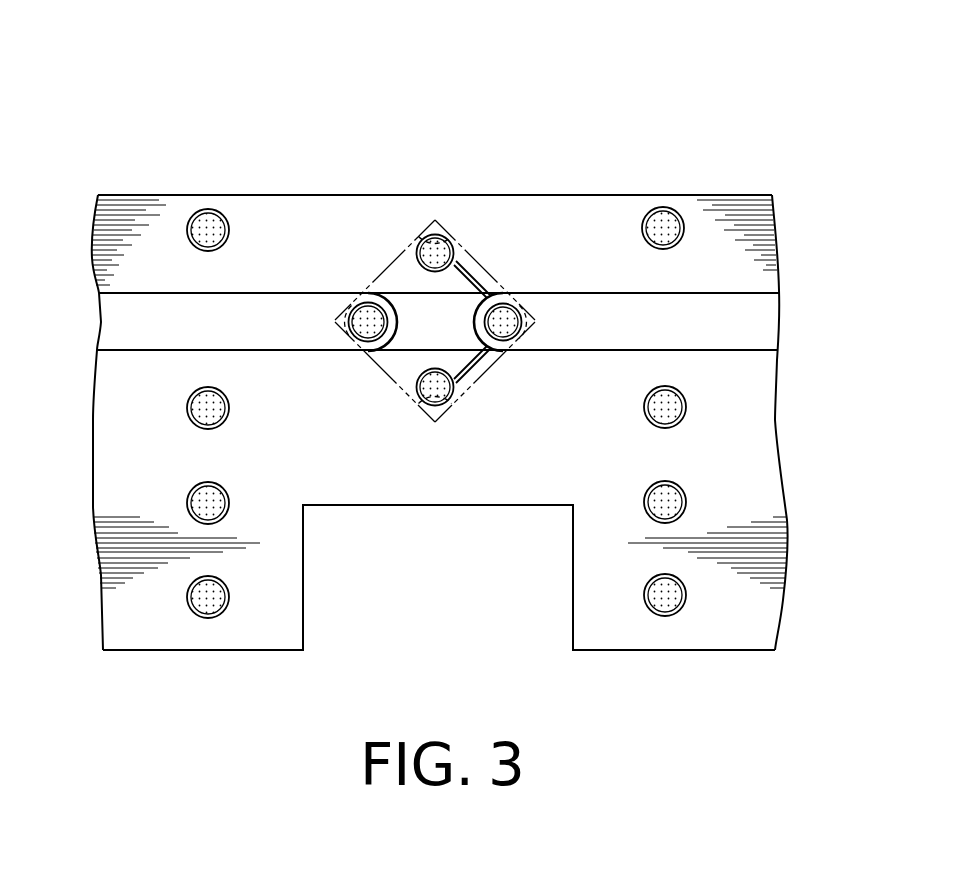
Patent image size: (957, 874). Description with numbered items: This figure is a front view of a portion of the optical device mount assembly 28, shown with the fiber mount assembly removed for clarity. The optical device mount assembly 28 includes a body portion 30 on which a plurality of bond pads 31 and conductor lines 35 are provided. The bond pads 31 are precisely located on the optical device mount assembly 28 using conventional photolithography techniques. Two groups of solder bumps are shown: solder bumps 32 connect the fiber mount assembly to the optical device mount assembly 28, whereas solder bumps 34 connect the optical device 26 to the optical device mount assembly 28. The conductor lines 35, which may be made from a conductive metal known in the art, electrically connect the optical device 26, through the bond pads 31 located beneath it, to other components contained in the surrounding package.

The optical device 26 is at (419, 252).
The optical device mount assembly 28 is at (683, 101).
The body portion 30 is at (570, 210).
The bond pads 31 is at (197, 244).
The solder bumps 32 is at (198, 212).
The solder bumps 34 is at (460, 254).
The conductor lines 35 is at (118, 324).